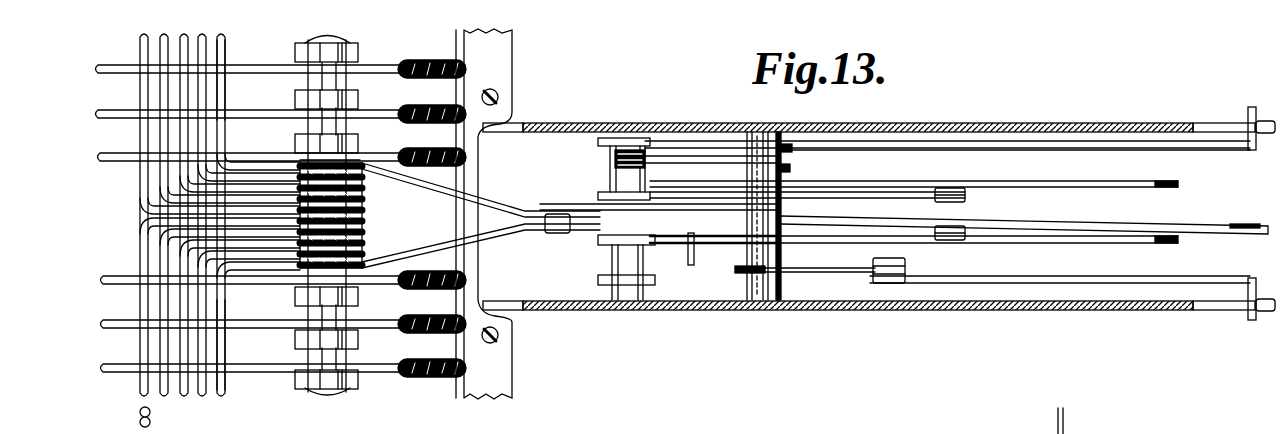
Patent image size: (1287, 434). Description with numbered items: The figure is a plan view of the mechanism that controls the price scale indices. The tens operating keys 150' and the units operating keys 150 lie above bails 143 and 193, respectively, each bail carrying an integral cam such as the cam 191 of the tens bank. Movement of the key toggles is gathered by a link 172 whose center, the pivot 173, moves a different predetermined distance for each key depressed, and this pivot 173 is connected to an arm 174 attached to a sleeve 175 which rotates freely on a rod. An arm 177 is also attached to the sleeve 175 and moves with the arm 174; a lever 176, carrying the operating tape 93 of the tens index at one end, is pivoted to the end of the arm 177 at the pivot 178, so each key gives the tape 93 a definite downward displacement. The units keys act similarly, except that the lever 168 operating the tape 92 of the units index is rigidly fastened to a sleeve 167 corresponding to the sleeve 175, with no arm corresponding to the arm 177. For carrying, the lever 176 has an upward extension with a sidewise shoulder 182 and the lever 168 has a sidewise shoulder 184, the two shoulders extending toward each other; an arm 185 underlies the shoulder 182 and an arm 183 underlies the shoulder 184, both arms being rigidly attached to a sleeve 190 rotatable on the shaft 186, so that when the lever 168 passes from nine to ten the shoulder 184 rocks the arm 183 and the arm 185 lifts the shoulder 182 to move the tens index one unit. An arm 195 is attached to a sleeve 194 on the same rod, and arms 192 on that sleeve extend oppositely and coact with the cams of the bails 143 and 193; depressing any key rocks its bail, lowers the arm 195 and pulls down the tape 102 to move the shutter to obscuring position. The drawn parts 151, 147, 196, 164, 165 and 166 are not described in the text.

The contact bars 151 is at (142, 88).
The bail 143 is at (228, 93).
The tens operating keys 150' is at (281, 113).
The units operating keys 150 is at (284, 341).
The conductor wires 147 is at (262, 257).
The bail 193 is at (225, 346).
The cam 191 is at (317, 168).
The coil 196 is at (362, 241).
The arms 192 is at (455, 244).
The arm 177 is at (702, 140).
The sidewise shoulder 182 is at (640, 150).
The sleeve 175 is at (600, 178).
The arm 185 is at (660, 161).
The pivot 178 is at (800, 149).
The sleeve 190 is at (788, 172).
The arm 174 is at (878, 195).
The pivot 173 is at (952, 188).
The lever 176 is at (957, 148).
The link 172 is at (1020, 184).
The arm 195 is at (995, 217).
The rod 164 is at (1005, 244).
The collar 165 is at (950, 241).
The sleeve 194 is at (660, 213).
The sleeve 167 is at (600, 260).
The contact 166 is at (693, 233).
The shaft 186 is at (762, 300).
The arm 183 is at (805, 272).
The sidewise shoulder 184 is at (890, 284).
The lever 168 is at (995, 293).
The operating tape 93 is at (1255, 147).
The tape 102 is at (1240, 226).
The tape 92 is at (1252, 272).